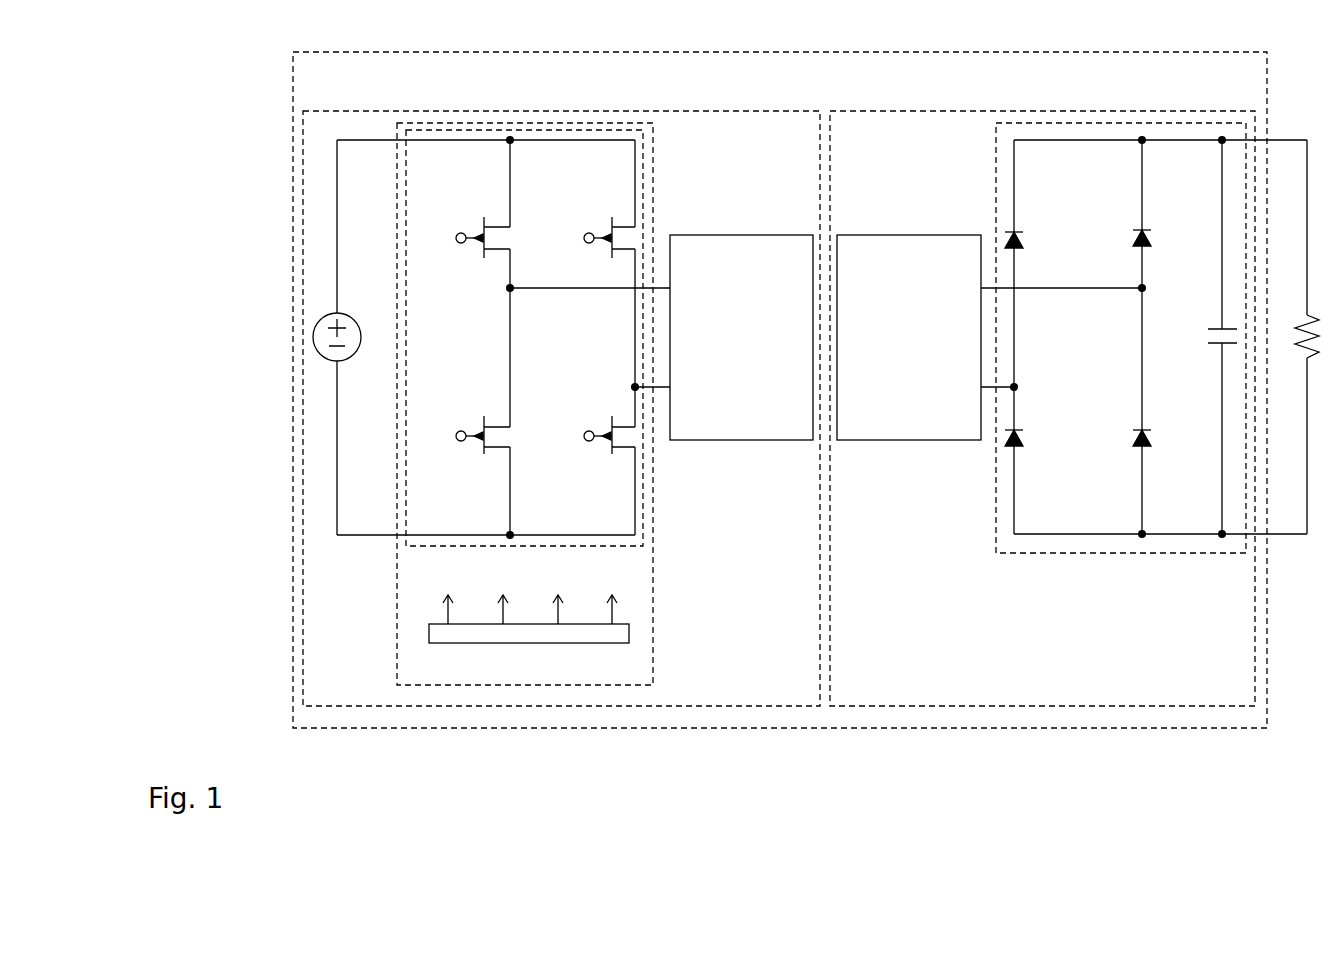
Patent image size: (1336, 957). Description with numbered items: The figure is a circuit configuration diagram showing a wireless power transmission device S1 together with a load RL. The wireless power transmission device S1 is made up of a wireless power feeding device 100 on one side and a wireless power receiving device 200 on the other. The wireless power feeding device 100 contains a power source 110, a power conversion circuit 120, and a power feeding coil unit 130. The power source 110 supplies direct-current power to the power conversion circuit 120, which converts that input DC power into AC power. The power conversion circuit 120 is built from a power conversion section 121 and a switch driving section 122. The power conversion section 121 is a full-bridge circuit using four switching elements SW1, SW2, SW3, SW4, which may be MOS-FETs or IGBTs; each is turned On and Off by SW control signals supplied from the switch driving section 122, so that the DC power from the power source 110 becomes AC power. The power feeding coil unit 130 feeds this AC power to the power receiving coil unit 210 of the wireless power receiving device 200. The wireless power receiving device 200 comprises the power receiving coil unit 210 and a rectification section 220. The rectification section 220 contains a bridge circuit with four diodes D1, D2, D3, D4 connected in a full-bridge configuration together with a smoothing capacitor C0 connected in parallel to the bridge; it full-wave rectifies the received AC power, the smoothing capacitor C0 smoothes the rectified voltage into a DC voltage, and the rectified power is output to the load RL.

The wireless power transmission device S1 is at (808, 52).
The wireless power feeding device 100 is at (594, 111).
The power source 110 is at (350, 360).
The power conversion circuit 120 is at (653, 186).
The power conversion section 121 is at (529, 338).
The switch driving section 122 is at (509, 644).
The power feeding coil unit 130 is at (757, 235).
The wireless power receiving device 200 is at (1020, 111).
The power receiving coil unit 210 is at (926, 235).
The rectification section 220 is at (1157, 365).
The switching element SW1 is at (461, 223).
The switching element SW2 is at (461, 450).
The switching element SW3 is at (586, 223).
The switching element SW4 is at (586, 450).
The diode D1 is at (1026, 218).
The diode D2 is at (1026, 453).
The diode D3 is at (1154, 217).
The diode D4 is at (1154, 453).
The smoothing capacitor C0 is at (1212, 337).
The load RL is at (1314, 337).